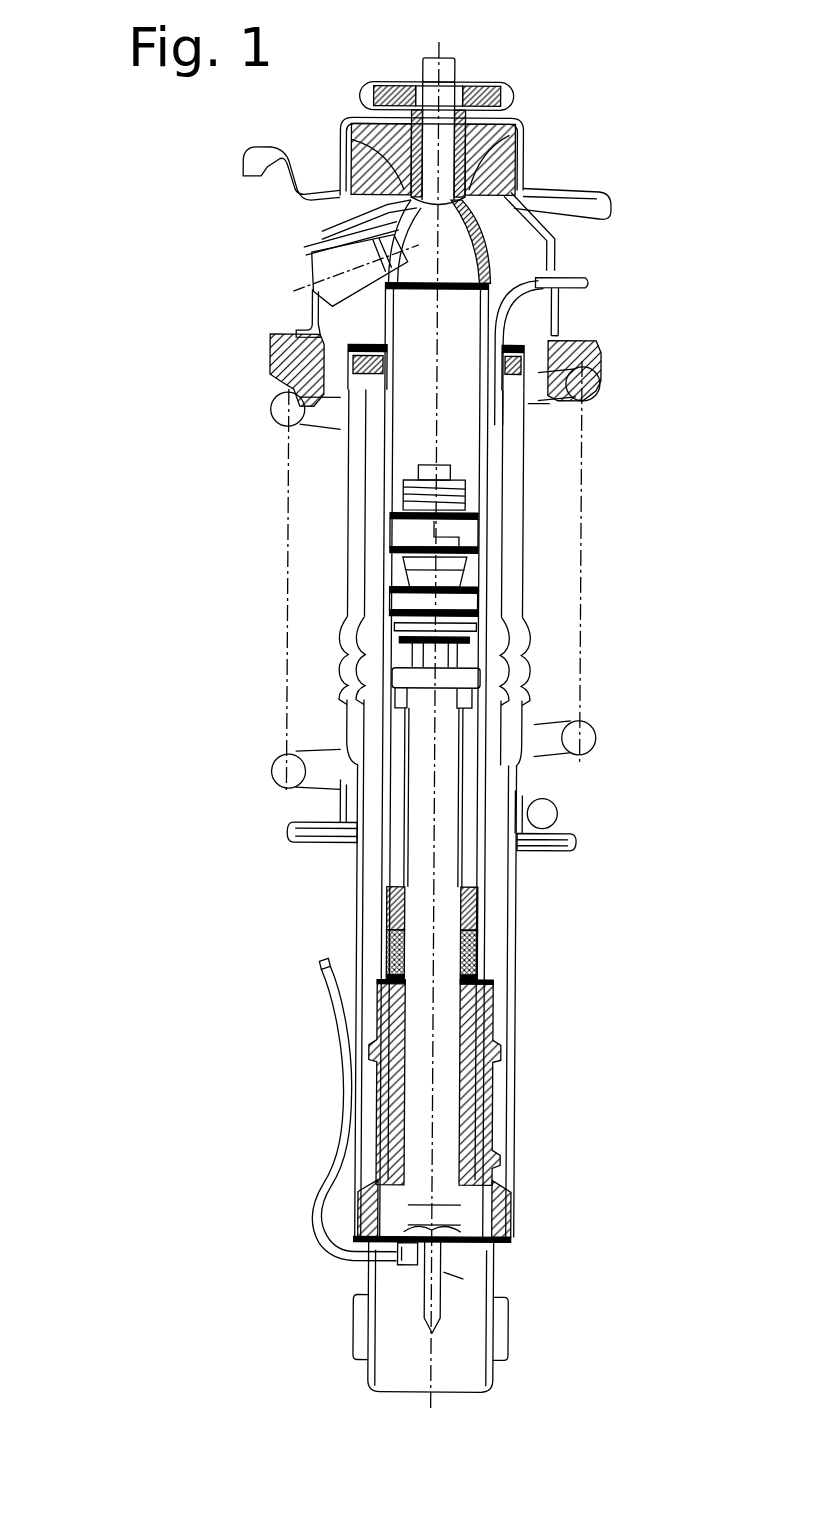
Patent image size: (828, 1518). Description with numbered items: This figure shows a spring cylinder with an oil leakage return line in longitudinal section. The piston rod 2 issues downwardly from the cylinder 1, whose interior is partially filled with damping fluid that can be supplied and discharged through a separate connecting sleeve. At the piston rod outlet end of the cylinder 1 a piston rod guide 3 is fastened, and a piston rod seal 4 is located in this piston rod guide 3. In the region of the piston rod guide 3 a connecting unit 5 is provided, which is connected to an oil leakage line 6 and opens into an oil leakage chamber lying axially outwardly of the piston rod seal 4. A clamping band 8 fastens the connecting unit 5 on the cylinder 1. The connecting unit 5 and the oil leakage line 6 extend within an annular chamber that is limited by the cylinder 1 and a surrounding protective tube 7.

The cylinder 1 is at (352, 742).
The piston rod 2 is at (425, 1078).
The piston rod guide 3 is at (382, 894).
The piston rod seal 4 is at (388, 933).
The connecting unit 5 is at (510, 950).
The oil leakage line 6 is at (513, 718).
The protective tube 7 is at (359, 851).
The clamping band 8 is at (375, 937).